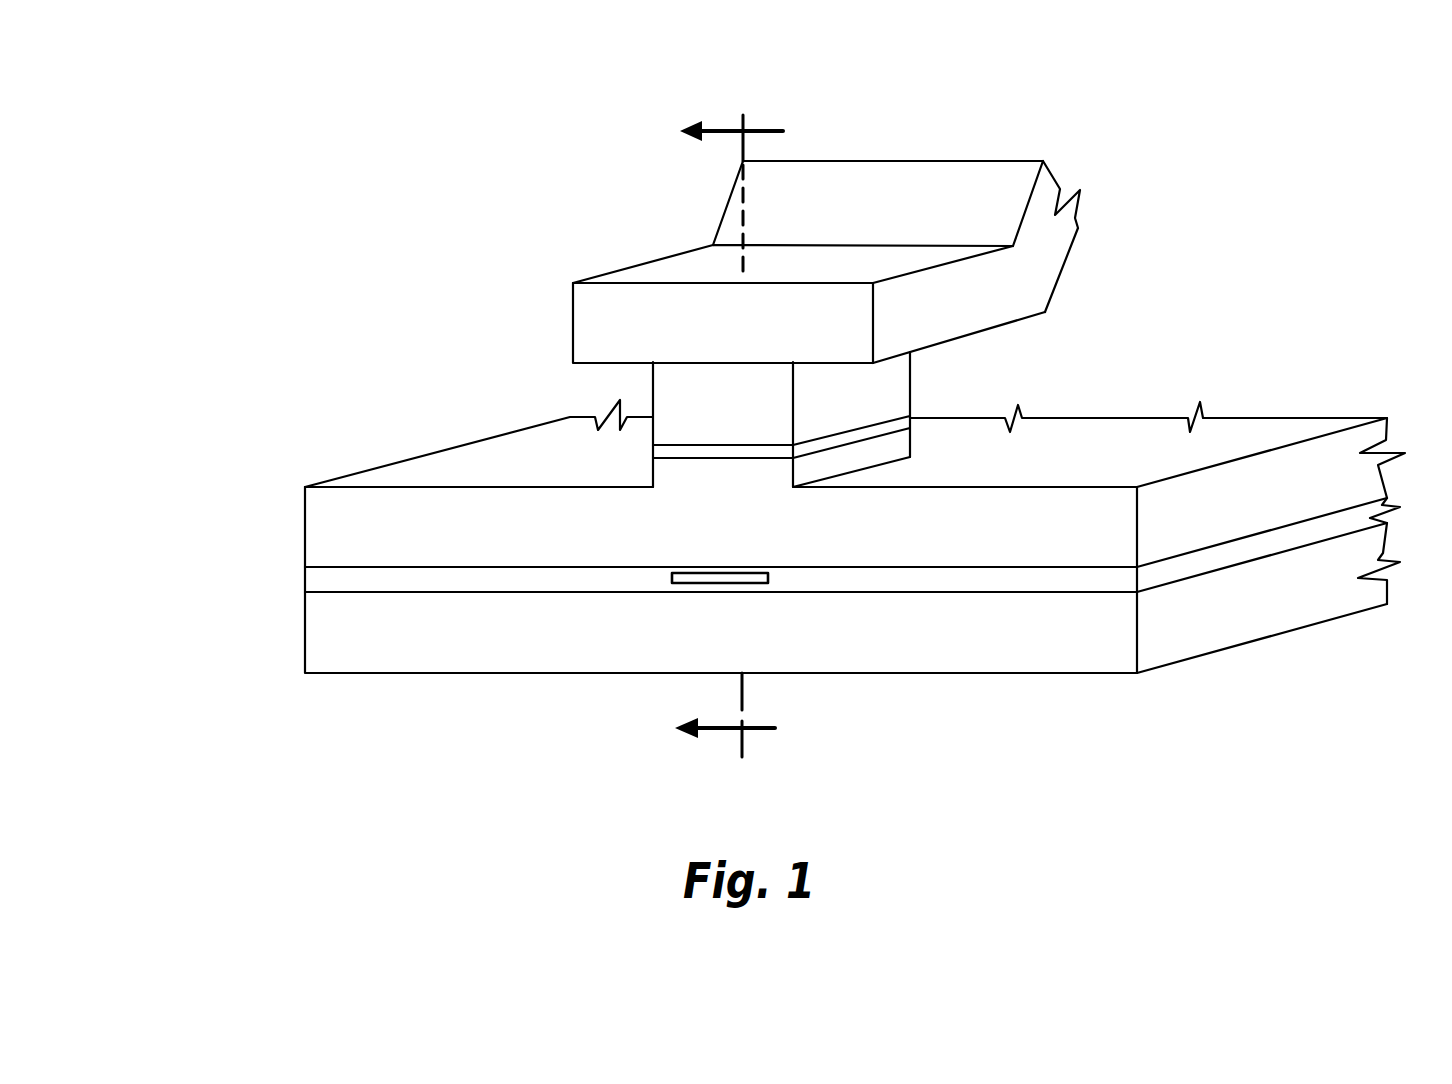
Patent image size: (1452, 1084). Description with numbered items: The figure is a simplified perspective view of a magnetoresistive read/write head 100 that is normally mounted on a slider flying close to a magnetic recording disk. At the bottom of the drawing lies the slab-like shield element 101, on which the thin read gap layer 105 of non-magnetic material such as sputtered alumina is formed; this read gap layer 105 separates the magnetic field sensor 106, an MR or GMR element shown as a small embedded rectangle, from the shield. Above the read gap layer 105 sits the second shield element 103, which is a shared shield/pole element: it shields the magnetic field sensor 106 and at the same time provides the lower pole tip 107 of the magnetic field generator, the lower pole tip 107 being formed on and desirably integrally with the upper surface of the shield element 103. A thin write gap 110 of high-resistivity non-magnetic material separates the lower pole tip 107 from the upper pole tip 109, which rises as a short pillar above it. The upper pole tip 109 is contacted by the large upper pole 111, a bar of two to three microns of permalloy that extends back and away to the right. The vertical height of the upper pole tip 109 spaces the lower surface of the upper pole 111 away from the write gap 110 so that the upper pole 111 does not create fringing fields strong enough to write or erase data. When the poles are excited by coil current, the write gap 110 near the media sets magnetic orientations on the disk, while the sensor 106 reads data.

The read/write head 100 is at (503, 208).
The shield element 101 is at (1203, 625).
The shield element 103 is at (1195, 447).
The read gap layer 105 is at (305, 575).
The magnetic field sensor 106 is at (702, 583).
The lower pole tip 107 is at (885, 452).
The upper pole tip 109 is at (873, 402).
The write gap 110 is at (653, 455).
The upper pole 111 is at (1030, 270).